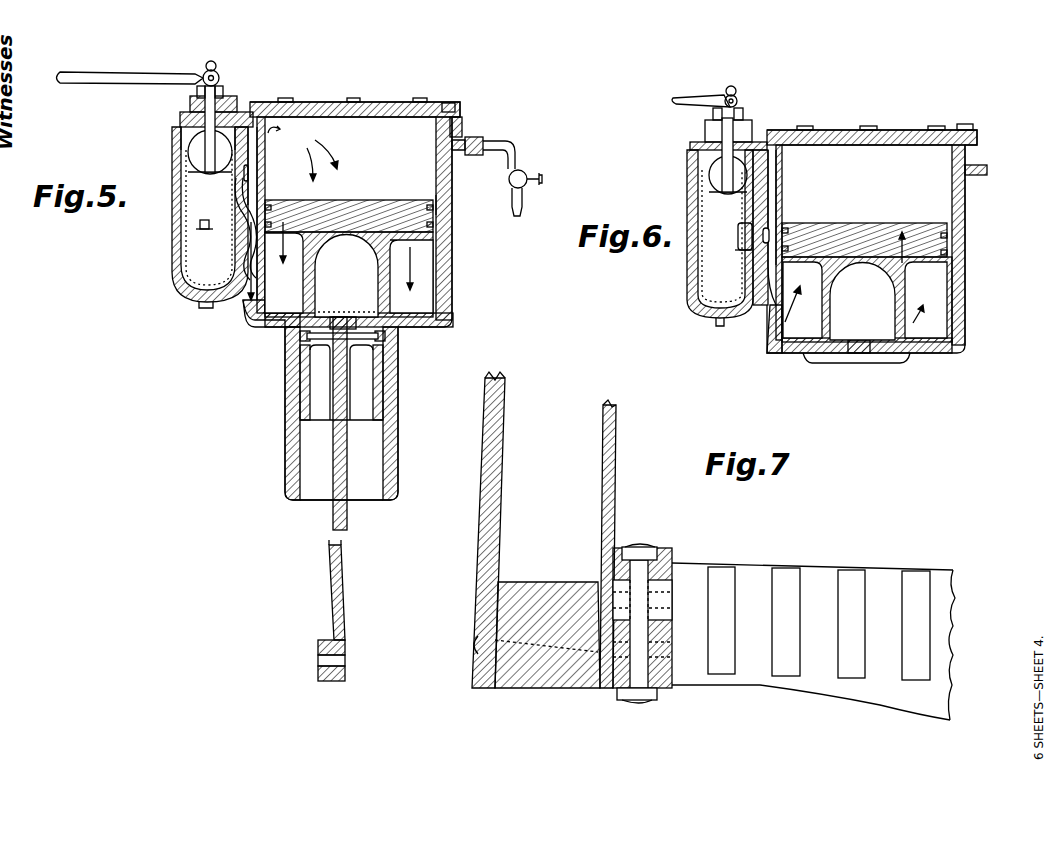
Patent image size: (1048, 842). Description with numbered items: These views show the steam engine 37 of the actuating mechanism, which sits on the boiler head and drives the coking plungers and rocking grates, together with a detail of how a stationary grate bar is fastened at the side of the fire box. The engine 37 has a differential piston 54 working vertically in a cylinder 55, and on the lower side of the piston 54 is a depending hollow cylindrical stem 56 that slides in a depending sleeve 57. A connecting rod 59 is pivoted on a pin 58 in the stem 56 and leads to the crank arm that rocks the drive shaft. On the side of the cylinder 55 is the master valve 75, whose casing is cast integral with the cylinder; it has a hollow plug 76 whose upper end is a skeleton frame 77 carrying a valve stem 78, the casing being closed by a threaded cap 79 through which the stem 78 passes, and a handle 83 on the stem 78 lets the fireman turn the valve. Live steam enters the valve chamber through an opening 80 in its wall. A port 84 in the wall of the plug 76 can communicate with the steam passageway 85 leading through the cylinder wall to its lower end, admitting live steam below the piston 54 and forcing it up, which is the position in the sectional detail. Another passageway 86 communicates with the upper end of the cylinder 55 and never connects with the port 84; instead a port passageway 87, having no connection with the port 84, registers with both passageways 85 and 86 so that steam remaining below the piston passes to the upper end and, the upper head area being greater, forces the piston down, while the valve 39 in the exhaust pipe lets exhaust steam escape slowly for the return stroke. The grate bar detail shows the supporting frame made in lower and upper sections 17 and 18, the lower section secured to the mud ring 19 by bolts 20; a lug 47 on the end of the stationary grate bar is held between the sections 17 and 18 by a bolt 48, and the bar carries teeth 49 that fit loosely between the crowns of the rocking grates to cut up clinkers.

In FIG. 7, the lower section of supporting frame 17 is at (611, 686).
In FIG. 7, the upper section of supporting frame 18 is at (622, 551).
In FIG. 7, the mud ring 19 is at (537, 681).
In FIG. 7, the bolts 20 is at (470, 645).
In FIG. 5, the steam engine 37 is at (368, 130).
In FIG. 6, the steam engine 37 is at (960, 337).
In FIG. 5, the valve 39 is at (523, 176).
In FIG. 7, the lugs 47 is at (617, 603).
In FIG. 7, the bolt 48 is at (634, 702).
In FIG. 7, the teeth 49 is at (848, 577).
In FIG. 5, the differential piston 54 is at (381, 208).
In FIG. 6, the differential piston 54 is at (861, 233).
In FIG. 5, the cylinder 55 is at (440, 205).
In FIG. 5, the hollow cylindrical stem 56 is at (347, 296).
In FIG. 5, the depending sleeve 57 is at (385, 420).
In FIG. 5, the pin 58 is at (380, 336).
In FIG. 5, the connecting rod 59 is at (338, 603).
In FIG. 5, the master valve 75 is at (180, 177).
In FIG. 6, the master valve 75 is at (690, 238).
In FIG. 5, the hollow plug 76 is at (200, 225).
In FIG. 6, the hollow plug 76 is at (707, 253).
In FIG. 5, the skeleton frame 77 is at (173, 143).
In FIG. 5, the valve stem 78 is at (215, 70).
In FIG. 6, the valve stem 78 is at (738, 96).
In FIG. 5, the threaded cap 79 is at (240, 109).
In FIG. 6, the threaded cap 79 is at (751, 139).
In FIG. 5, the opening 80 is at (198, 153).
In FIG. 6, the opening 80 is at (715, 176).
In FIG. 5, the handle 83 is at (72, 73).
In FIG. 6, the handle 83 is at (677, 97).
In FIG. 5, the port 84 is at (200, 231).
In FIG. 6, the port 84 is at (745, 258).
In FIG. 5, the steam passageway 85 is at (258, 303).
In FIG. 6, the steam passageway 85 is at (766, 303).
In FIG. 5, the passageway 86 is at (256, 166).
In FIG. 6, the passageway 86 is at (775, 190).
In FIG. 5, the port passageway 87 is at (243, 217).